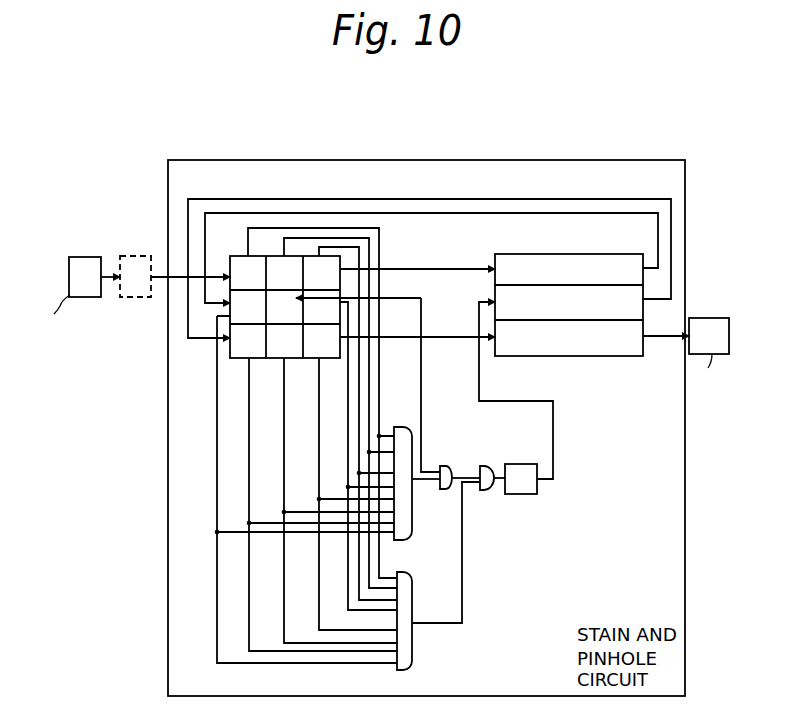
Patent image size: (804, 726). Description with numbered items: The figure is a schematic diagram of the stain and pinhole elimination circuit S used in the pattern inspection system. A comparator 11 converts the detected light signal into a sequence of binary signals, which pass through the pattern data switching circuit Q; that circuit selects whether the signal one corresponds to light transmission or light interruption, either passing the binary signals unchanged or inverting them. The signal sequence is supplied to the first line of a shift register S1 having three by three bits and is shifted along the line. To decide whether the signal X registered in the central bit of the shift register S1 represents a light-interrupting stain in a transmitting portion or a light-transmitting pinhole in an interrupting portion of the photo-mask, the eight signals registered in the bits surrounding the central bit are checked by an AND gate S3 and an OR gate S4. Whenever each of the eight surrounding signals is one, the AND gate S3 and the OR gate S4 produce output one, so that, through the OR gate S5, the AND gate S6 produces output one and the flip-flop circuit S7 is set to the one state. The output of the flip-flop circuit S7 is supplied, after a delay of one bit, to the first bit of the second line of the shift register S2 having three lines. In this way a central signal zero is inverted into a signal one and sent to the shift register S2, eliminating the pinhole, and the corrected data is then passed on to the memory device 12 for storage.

The stain and pinhole elimination circuit S is at (626, 160).
The comparator 11 is at (80, 257).
The pattern data switching circuit Q is at (131, 256).
The shift register S1 is at (232, 257).
The shift register S2 is at (603, 254).
The AND gate S3 is at (406, 427).
The OR gate S4 is at (414, 585).
The OR gate S5 is at (445, 466).
The AND gate S6 is at (487, 466).
The flip-flop circuit S7 is at (525, 464).
The memory device 12 is at (705, 318).